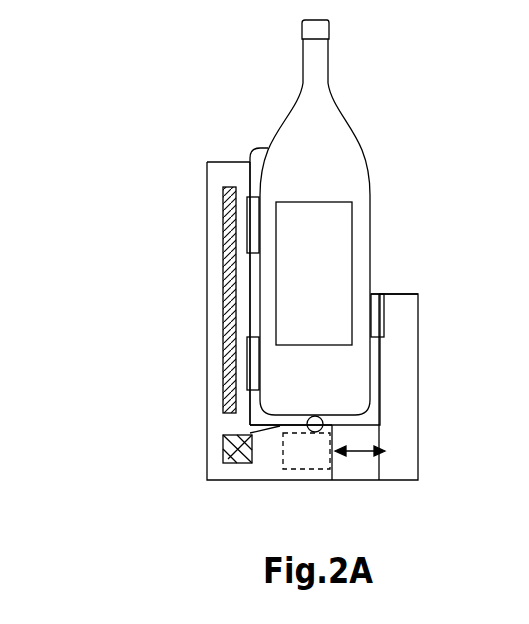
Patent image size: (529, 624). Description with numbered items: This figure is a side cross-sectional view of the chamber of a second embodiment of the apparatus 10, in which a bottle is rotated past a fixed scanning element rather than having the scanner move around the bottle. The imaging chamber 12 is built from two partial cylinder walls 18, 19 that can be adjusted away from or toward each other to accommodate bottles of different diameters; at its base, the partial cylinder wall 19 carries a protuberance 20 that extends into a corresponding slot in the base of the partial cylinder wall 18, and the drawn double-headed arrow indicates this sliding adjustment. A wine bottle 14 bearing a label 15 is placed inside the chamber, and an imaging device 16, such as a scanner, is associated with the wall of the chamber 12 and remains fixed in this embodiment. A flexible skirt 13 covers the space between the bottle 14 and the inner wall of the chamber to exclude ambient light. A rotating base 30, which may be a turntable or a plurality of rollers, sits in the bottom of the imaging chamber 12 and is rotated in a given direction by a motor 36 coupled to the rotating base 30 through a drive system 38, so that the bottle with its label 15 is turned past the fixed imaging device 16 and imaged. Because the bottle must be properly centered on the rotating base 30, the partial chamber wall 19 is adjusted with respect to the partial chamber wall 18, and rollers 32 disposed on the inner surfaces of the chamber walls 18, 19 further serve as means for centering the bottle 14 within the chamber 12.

The apparatus 10 is at (168, 392).
The imaging chamber 12 is at (207, 442).
The flexible skirt 13 is at (259, 150).
The wine bottle 14 is at (325, 161).
The label 15 is at (327, 266).
The imaging device 16 is at (230, 322).
The partial cylinder wall 18 is at (217, 172).
The partial cylinder wall 19 is at (402, 367).
The protuberance 20 is at (325, 460).
The rotating base 30 is at (313, 433).
The rollers 32 is at (255, 228).
The motor 36 is at (230, 453).
The drive system 38 is at (266, 436).